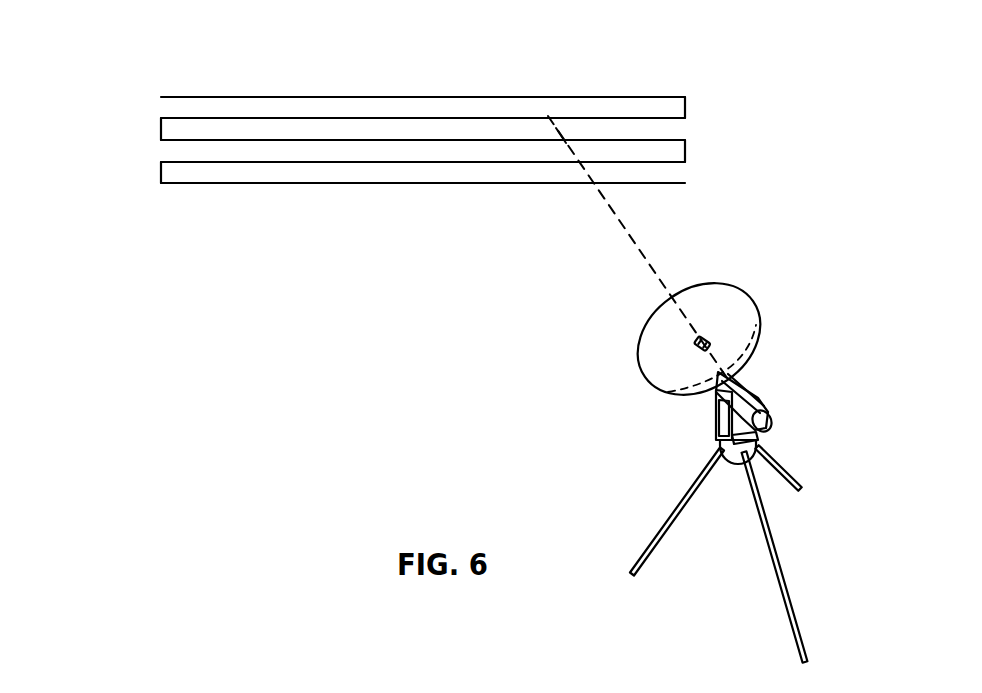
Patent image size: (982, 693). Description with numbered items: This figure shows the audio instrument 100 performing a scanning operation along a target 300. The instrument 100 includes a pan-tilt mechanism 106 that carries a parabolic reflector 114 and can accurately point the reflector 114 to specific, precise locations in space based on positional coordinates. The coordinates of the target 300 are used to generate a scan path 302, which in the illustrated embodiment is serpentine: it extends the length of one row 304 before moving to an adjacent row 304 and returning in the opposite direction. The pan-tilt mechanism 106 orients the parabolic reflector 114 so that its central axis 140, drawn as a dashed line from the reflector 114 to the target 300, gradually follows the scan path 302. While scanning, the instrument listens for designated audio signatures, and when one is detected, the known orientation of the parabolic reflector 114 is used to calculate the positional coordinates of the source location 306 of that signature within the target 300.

The audio instrument 100 is at (753, 445).
The pan-tilt mechanism 106 is at (717, 432).
The parabolic reflector 114 is at (722, 302).
The central axis 140 is at (637, 247).
The target 300 is at (402, 97).
The scan path 302 is at (222, 96).
The row 304 is at (142, 95).
The source location 306 is at (565, 127).